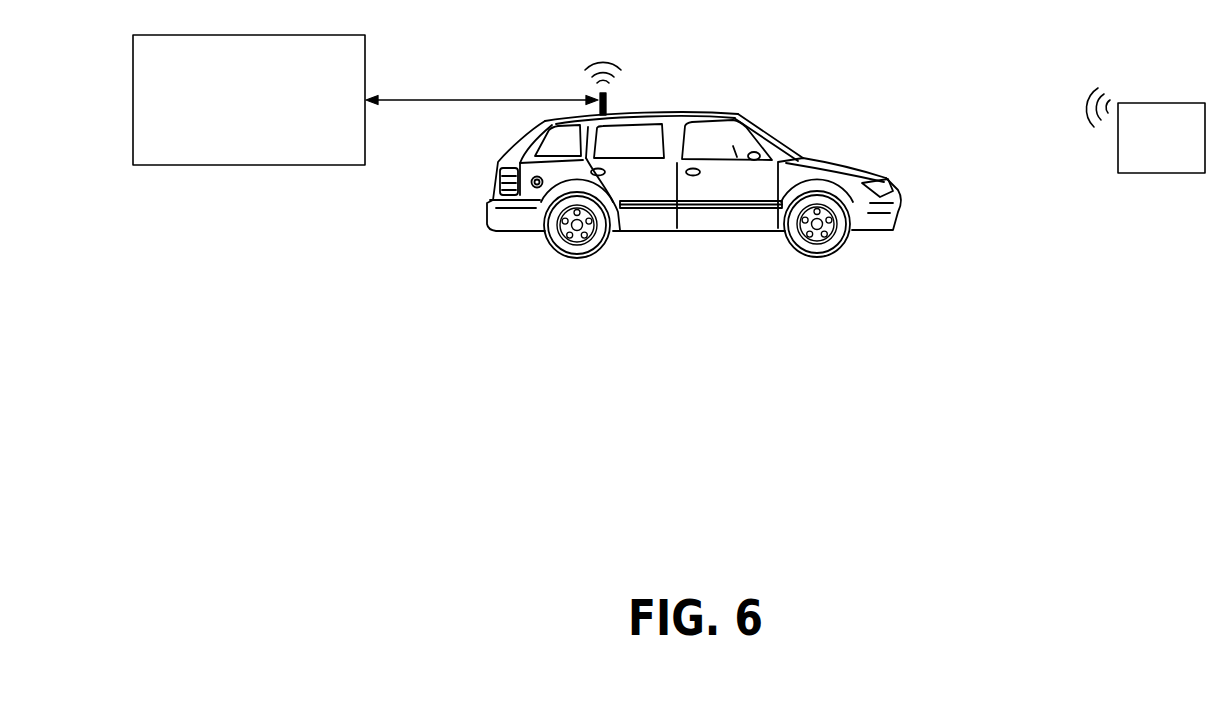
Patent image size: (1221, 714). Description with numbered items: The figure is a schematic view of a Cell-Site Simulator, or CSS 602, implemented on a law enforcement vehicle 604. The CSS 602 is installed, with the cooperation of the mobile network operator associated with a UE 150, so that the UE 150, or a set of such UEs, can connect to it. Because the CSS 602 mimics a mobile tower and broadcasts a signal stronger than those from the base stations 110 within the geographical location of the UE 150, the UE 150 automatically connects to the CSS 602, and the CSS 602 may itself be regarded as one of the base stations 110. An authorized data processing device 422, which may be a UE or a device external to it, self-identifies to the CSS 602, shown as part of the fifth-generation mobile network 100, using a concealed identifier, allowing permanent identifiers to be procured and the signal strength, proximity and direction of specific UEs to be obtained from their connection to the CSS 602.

The authorized data processing device 422 is at (267, 136).
The Cell-Site Simulator (CSS) 602 is at (607, 94).
The base stations 110 is at (721, 71).
The law enforcement vehicle 604 is at (897, 207).
The 5G mobile network 100 is at (716, 325).
The UE (user equipment) 150 is at (1190, 164).